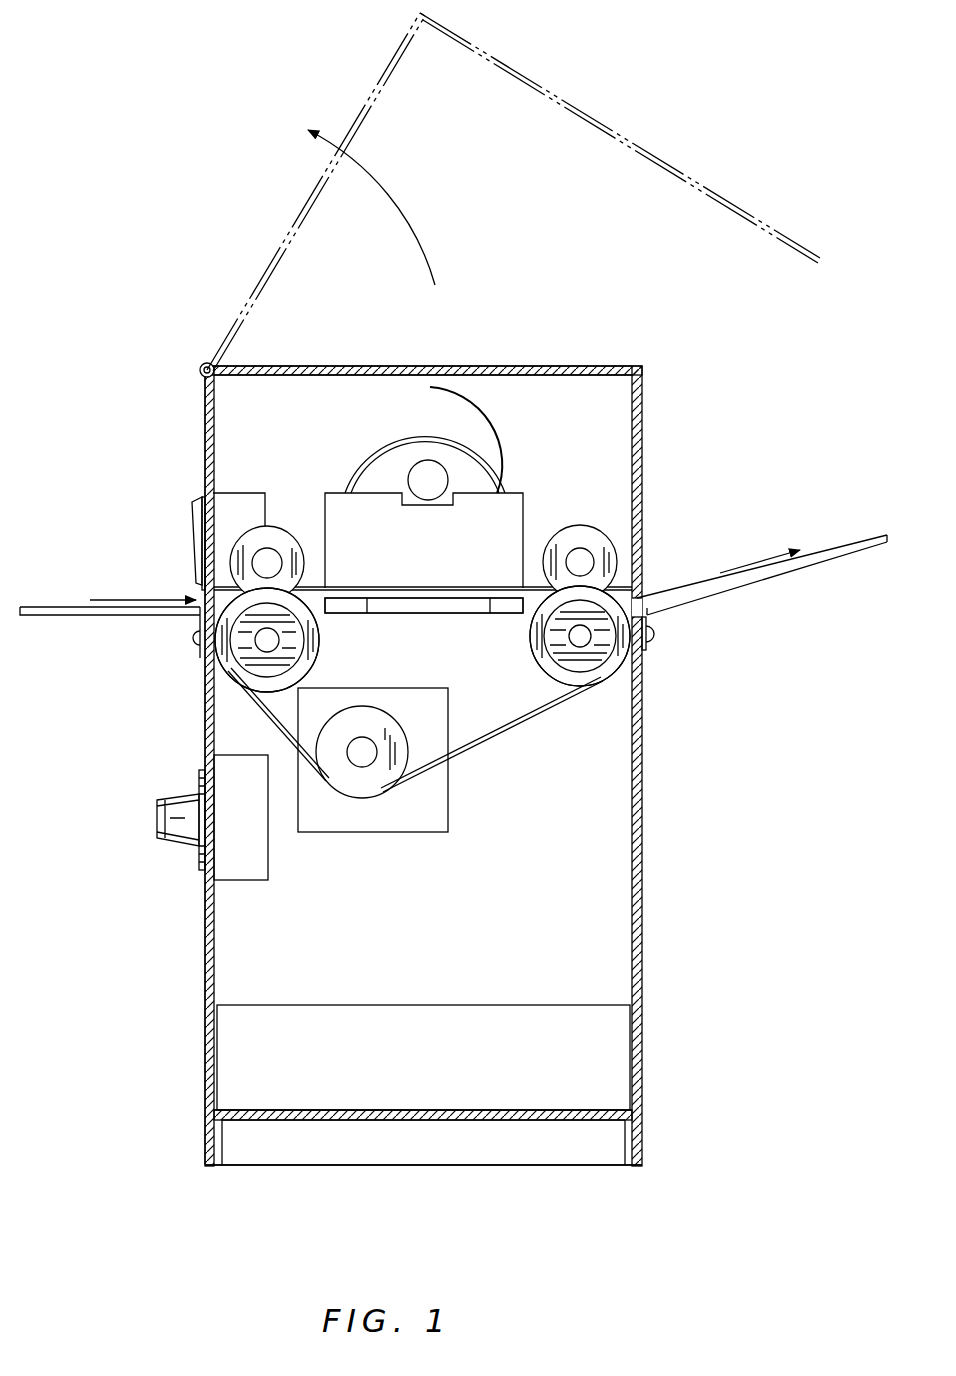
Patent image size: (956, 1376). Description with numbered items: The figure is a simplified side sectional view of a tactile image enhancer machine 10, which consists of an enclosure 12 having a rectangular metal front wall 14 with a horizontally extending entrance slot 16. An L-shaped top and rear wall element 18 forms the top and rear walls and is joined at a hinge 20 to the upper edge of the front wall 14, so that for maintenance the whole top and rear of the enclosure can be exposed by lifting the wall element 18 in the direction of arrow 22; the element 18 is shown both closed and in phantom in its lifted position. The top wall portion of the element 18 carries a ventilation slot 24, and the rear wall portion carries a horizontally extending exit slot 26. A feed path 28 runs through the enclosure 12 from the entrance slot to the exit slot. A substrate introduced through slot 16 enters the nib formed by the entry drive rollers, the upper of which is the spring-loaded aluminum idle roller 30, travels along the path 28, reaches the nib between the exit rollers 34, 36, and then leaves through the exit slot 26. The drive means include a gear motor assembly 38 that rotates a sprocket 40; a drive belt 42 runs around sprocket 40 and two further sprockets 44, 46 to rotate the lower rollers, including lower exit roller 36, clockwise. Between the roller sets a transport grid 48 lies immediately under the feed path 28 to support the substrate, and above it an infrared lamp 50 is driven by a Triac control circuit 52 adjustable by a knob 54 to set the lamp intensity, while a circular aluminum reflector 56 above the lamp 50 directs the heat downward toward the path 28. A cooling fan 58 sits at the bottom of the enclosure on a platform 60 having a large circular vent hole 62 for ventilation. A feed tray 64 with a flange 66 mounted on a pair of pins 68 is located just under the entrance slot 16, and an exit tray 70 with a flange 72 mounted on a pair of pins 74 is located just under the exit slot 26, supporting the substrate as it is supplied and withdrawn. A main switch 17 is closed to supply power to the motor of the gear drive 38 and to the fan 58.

The tactile image enhancer machine 10 is at (140, 346).
The enclosure 12 is at (200, 941).
The front wall 14 is at (205, 412).
The entrance slot 16 is at (196, 596).
The main switch 17 is at (192, 505).
The top and rear wall element 18 is at (613, 365).
The hinge 20 is at (205, 363).
The arrow 22 is at (408, 213).
The ventilation slot 24 is at (425, 367).
The exit slot 26 is at (645, 597).
The feed path 28 is at (417, 592).
The entry drive roller 30 is at (287, 546).
The exit roller 34 is at (593, 537).
The exit roller 36 is at (552, 643).
The gear motor assembly 38 is at (428, 820).
The sprocket 40 is at (370, 787).
The drive belt 42 is at (493, 728).
The sprocket 44 is at (230, 672).
The sprocket 46 is at (600, 673).
The transport grid 48 is at (433, 603).
The infrared lamp 50 is at (433, 478).
The control circuit 52 is at (238, 865).
The knob 54 is at (177, 823).
The reflector 56 is at (478, 385).
The cooling fan 58 is at (520, 1040).
The platform 60 is at (603, 1120).
The vent hole 62 is at (317, 1115).
The feed tray 64 is at (119, 615).
The flange 66 is at (200, 658).
The pins 68 is at (194, 638).
The exit tray 70 is at (795, 562).
The flange 72 is at (645, 648).
The pins 74 is at (653, 628).